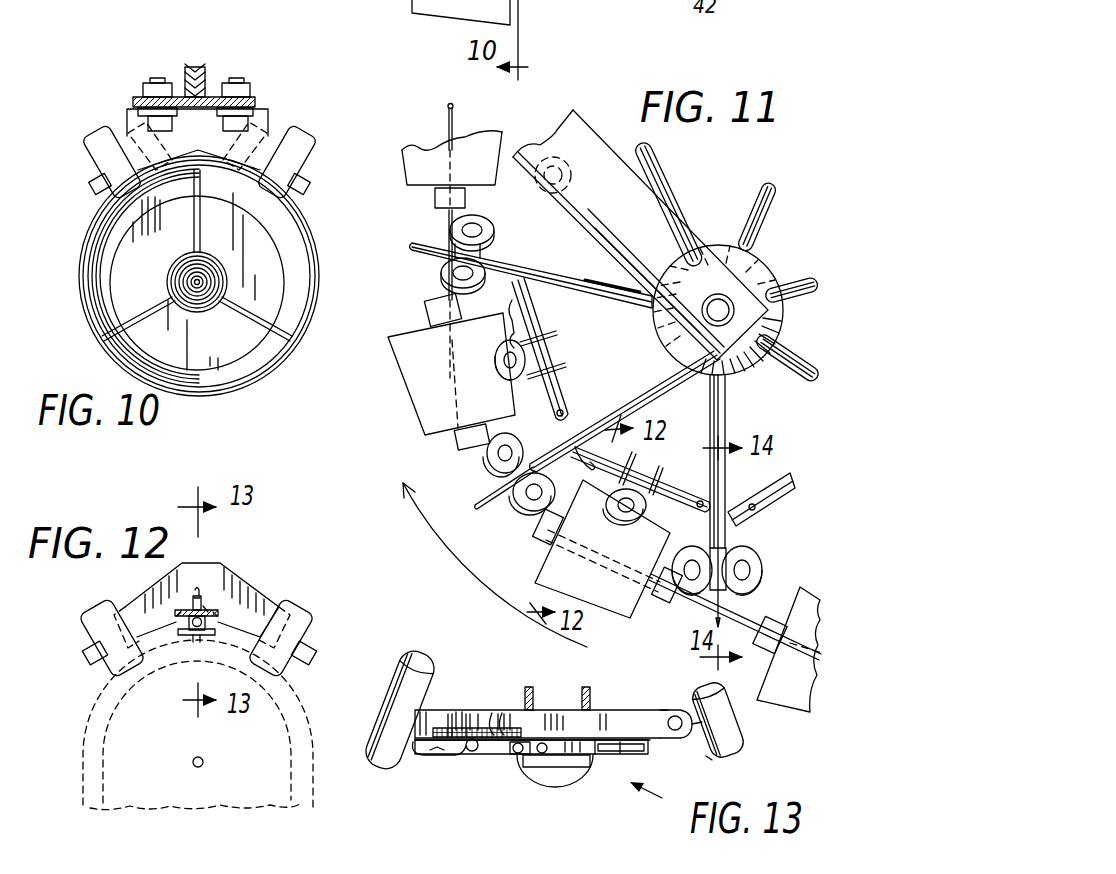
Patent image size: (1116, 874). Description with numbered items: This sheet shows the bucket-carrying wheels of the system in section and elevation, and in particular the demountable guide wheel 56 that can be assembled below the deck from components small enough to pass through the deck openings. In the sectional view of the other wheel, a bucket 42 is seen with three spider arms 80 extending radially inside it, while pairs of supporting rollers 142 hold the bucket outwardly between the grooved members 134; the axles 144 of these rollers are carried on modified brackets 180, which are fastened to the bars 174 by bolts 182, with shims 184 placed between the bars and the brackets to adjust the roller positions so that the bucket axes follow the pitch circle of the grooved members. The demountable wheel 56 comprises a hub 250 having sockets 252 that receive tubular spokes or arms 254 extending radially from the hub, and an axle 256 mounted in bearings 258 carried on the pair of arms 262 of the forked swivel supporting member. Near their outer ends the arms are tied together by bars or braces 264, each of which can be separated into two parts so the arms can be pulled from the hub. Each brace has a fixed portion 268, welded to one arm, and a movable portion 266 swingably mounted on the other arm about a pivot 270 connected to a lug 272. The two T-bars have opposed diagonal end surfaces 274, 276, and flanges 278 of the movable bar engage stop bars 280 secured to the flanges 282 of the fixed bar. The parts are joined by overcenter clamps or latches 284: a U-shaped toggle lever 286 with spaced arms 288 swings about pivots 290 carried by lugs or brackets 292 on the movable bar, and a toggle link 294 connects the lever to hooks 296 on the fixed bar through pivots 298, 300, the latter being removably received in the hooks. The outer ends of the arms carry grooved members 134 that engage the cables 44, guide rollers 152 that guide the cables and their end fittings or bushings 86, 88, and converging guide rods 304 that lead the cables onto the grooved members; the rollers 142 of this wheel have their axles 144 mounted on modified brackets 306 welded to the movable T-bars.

In FIG. 10, the bucket 42 is at (85, 285).
In FIG. 11, the bucket 42 is at (392, 388).
In FIG. 12, the bucket 42 is at (82, 738).
In FIG. 11, the cable 44 is at (447, 119).
In FIG. 11, the demountable wheel 56 is at (405, 241).
In FIG. 10, the spider arm 80 is at (193, 234).
In FIG. 11, the end fitting or bushing 86 is at (455, 442).
In FIG. 10, the end fitting or bushing 88 is at (150, 265).
In FIG. 11, the end fitting or bushing 88 is at (428, 306).
In FIG. 11, the grooved member 134 is at (738, 600).
In FIG. 10, the supporting roller 142 is at (96, 132).
In FIG. 11, the supporting roller 142 is at (496, 363).
In FIG. 12, the supporting roller 142 is at (96, 612).
In FIG. 10, the axle 144 is at (92, 184).
In FIG. 12, the axle 144 is at (86, 658).
In FIG. 11, the guide roller 152 is at (440, 272).
In FIG. 10, the bar 174 is at (150, 97).
In FIG. 10, the modified bracket 180 is at (130, 118).
In FIG. 10, the bolt 182 is at (236, 78).
In FIG. 10, the shim 184 is at (256, 104).
In FIG. 11, the hub 250 is at (773, 273).
In FIG. 11, the socket 252 is at (740, 380).
In FIG. 11, the tubular spoke or arm 254 is at (666, 186).
In FIG. 13, the tubular spoke or arm 254 is at (410, 650).
In FIG. 11, the axle 256 is at (718, 293).
In FIG. 11, the bearing 258 is at (690, 310).
In FIG. 11, the arm 262 is at (557, 135).
In FIG. 11, the bar or brace 264 is at (559, 346).
In FIG. 11, the movable portion or T-bar 266 is at (554, 372).
In FIG. 12, the movable portion or T-bar 266 is at (197, 600).
In FIG. 13, the movable portion or T-bar 266 is at (606, 711).
In FIG. 11, the fixed portion or T-bar 268 is at (532, 304).
In FIG. 13, the fixed portion or T-bar 268 is at (452, 710).
In FIG. 11, the pivot 270 is at (585, 425).
In FIG. 13, the pivot 270 is at (677, 710).
In FIG. 11, the lug 272 is at (564, 469).
In FIG. 13, the lug 272 is at (733, 757).
In FIG. 13, the diagonal end surface 274 is at (493, 726).
In FIG. 13, the diagonal end surface 276 is at (529, 688).
In FIG. 12, the flange 278 is at (208, 612).
In FIG. 13, the flange 278 is at (560, 730).
In FIG. 12, the stop bar 280 is at (195, 608).
In FIG. 13, the stop bar 280 is at (470, 722).
In FIG. 13, the flange 282 is at (432, 710).
In FIG. 11, the clamp or latch 284 is at (640, 540).
In FIG. 13, the clamp or latch 284 is at (650, 777).
In FIG. 12, the U-shaped toggle lever 286 is at (193, 640).
In FIG. 13, the U-shaped toggle lever 286 is at (655, 748).
In FIG. 13, the arm 288 is at (578, 765).
In FIG. 13, the pivot 290 is at (541, 754).
In FIG. 12, the lug or bracket 292 is at (181, 612).
In FIG. 13, the lug or bracket 292 is at (517, 754).
In FIG. 12, the toggle link 294 is at (200, 642).
In FIG. 13, the toggle link 294 is at (512, 755).
In FIG. 13, the hook 296 is at (443, 753).
In FIG. 13, the pivot 298 is at (550, 768).
In FIG. 13, the pivot 300 is at (470, 752).
In FIG. 11, the guide rod 304 is at (477, 502).
In FIG. 12, the modified bracket 306 is at (212, 617).